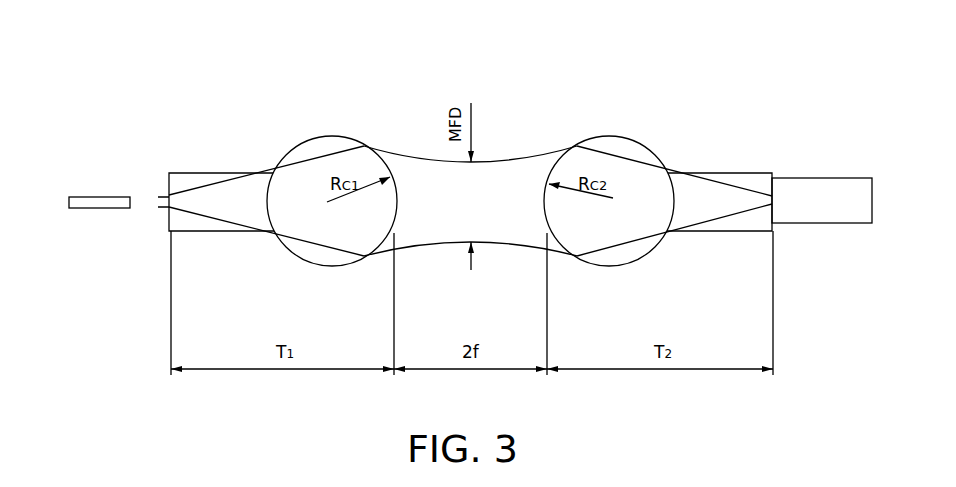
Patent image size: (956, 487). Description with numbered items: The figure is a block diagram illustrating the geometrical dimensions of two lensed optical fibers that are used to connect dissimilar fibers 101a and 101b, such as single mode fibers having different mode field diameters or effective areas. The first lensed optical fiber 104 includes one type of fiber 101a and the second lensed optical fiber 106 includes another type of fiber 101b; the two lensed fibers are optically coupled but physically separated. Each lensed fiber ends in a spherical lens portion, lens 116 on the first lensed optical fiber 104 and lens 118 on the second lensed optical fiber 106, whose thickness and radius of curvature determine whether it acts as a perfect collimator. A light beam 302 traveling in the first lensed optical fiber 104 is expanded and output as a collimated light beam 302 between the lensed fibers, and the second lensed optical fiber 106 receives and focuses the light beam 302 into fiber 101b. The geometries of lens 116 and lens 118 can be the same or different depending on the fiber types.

The first lensed optical fiber 104 is at (203, 35).
The second lensed optical fiber 106 is at (740, 35).
The lens 116 is at (330, 143).
The lens 118 is at (611, 143).
The light beam 302 is at (237, 185).
The fiber 101a is at (99, 196).
The fiber 101b is at (843, 177).